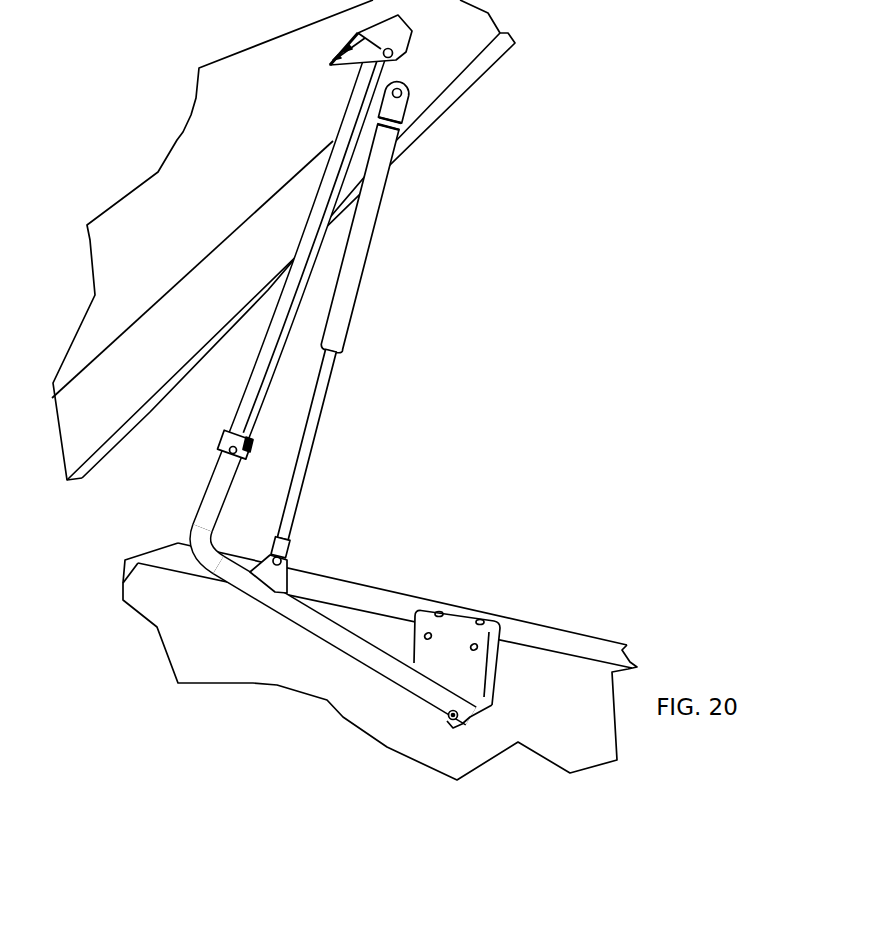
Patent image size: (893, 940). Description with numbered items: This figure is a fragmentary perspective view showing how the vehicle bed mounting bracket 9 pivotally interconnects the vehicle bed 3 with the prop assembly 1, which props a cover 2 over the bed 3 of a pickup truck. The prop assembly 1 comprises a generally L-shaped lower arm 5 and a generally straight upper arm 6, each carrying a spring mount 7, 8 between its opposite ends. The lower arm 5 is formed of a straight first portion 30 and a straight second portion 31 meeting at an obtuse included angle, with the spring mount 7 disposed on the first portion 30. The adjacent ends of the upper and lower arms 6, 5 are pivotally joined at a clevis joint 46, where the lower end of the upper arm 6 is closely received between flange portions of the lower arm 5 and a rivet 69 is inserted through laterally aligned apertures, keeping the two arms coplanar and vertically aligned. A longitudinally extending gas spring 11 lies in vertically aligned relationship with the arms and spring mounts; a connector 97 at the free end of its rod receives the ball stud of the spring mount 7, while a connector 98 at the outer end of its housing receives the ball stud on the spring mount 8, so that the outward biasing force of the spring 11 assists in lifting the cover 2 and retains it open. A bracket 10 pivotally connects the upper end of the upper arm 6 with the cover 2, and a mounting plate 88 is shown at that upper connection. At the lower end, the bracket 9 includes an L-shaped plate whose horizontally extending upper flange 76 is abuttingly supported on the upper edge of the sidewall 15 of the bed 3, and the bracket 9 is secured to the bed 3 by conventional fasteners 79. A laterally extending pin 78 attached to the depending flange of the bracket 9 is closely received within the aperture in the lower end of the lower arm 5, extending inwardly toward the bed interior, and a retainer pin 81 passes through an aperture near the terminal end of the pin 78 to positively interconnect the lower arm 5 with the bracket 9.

The prop assembly 1 is at (316, 381).
The cover 2 is at (174, 134).
The bed 3 is at (368, 578).
The lower arm 5 is at (189, 542).
The upper arm 6 is at (314, 238).
The spring mount 7 is at (275, 576).
The spring mount 8 is at (401, 80).
The bracket 9 is at (422, 608).
The bracket 10 is at (331, 66).
The spring 11 is at (343, 350).
The sidewall 15 is at (545, 740).
The first portion 30 is at (348, 657).
The second portion 31 is at (214, 483).
The clevis joint 46 is at (196, 425).
The rivet 69 is at (242, 455).
The flange 76 is at (457, 617).
The pin 78 is at (452, 721).
The fasteners 79 is at (488, 618).
The retainer pin 81 is at (436, 709).
The mounting plate 88 is at (360, 67).
The connector 97 is at (290, 552).
The connector 98 is at (402, 108).